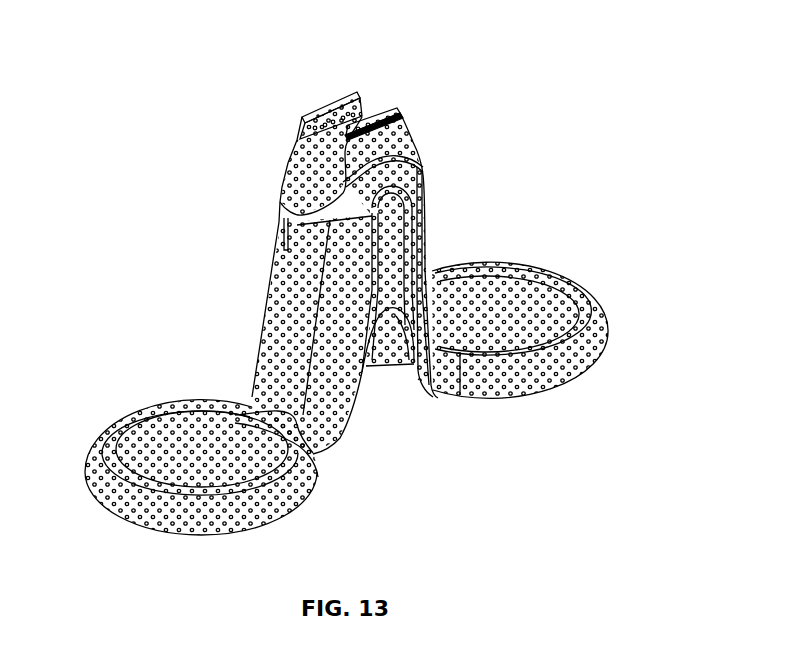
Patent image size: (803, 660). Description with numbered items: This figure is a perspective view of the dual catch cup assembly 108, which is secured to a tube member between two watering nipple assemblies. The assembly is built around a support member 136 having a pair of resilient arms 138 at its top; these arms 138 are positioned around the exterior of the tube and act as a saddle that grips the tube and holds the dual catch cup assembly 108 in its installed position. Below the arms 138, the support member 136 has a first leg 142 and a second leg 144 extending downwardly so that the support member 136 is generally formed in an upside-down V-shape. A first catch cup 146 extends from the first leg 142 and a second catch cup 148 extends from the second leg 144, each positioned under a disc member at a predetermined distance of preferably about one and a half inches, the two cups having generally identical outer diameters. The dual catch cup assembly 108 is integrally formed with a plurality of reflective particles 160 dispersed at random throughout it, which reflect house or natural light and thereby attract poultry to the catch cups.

The dual catch cup assembly 108 is at (160, 105).
The support member 136 is at (436, 164).
The resilient arms 138 is at (340, 105).
The first leg 142 is at (268, 337).
The second leg 144 is at (427, 230).
The first catch cup 146 is at (190, 532).
The second catch cup 148 is at (560, 387).
The reflective particles 160 is at (290, 181).